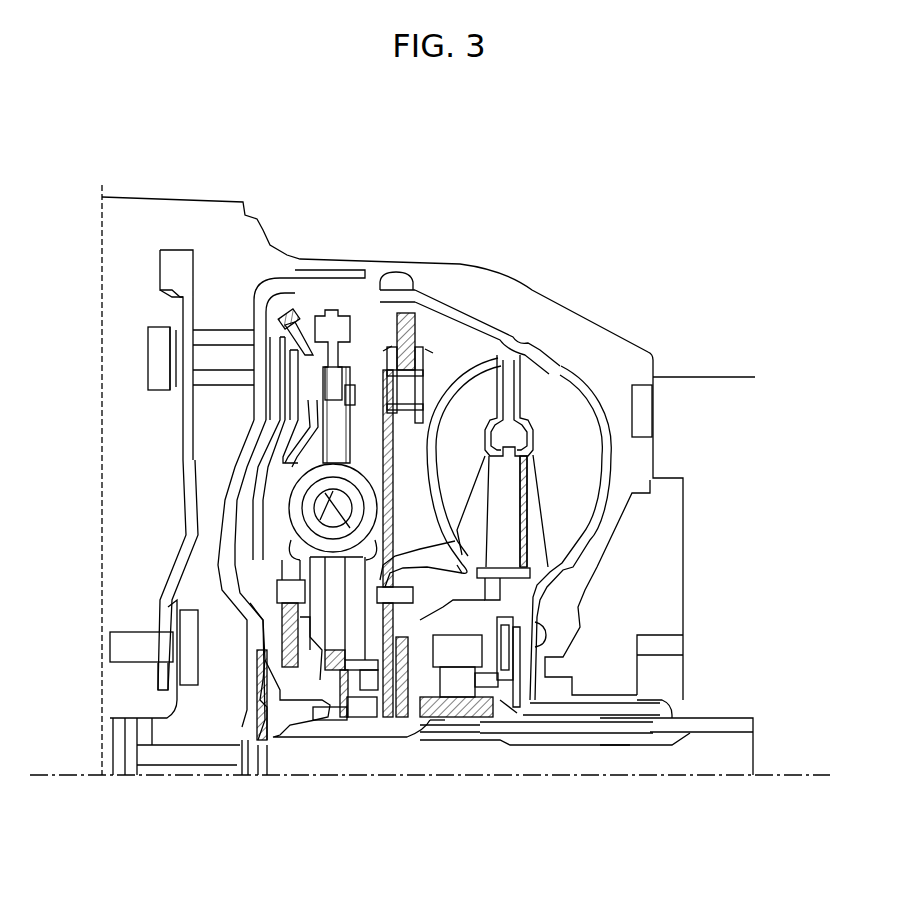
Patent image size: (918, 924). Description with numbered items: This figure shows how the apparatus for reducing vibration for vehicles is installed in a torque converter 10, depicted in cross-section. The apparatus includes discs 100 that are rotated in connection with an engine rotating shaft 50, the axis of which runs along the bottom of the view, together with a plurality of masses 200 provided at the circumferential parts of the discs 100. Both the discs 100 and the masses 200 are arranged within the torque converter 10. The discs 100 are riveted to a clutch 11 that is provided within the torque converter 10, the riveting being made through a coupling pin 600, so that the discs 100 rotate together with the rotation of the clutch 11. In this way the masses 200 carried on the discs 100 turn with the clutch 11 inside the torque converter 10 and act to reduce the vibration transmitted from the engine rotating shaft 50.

The torque converter 10 is at (562, 265).
The clutch 11 is at (343, 436).
The engine rotating shaft 50 is at (382, 777).
The discs 100 is at (395, 340).
The masses 200 is at (390, 350).
The coupling pin 600 is at (397, 482).